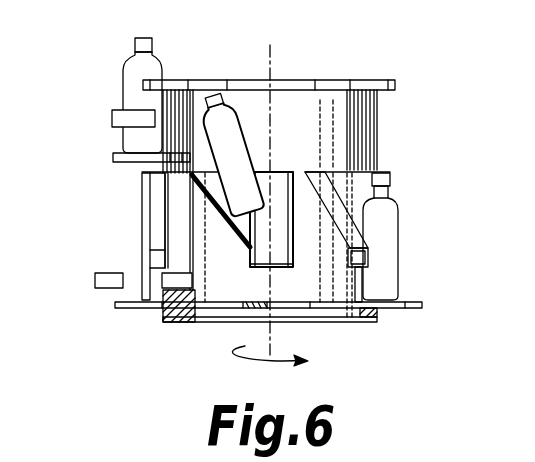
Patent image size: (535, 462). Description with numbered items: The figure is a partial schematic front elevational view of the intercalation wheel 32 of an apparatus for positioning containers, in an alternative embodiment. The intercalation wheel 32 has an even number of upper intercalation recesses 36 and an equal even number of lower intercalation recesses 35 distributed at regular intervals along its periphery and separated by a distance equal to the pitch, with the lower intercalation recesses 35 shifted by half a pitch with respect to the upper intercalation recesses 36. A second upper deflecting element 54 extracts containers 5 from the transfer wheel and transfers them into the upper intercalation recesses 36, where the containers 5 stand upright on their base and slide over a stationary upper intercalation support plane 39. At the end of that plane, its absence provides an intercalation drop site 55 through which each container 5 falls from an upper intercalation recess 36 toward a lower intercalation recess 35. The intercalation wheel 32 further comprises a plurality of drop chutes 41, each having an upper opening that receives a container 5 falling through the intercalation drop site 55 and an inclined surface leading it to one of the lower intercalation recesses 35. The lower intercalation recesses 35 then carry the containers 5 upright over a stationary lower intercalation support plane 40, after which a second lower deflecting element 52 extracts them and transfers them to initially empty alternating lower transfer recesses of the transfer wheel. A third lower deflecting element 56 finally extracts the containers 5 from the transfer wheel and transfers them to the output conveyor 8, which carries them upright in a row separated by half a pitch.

The container 5 is at (390, 225).
The output conveyor 8 is at (135, 309).
The intercalation wheel 32 is at (388, 137).
The lower intercalation recess 35 is at (283, 268).
The upper intercalation recess 36 is at (330, 80).
The upper intercalation support plane 39 is at (117, 162).
The lower intercalation support plane 40 is at (407, 309).
The drop chute 41 is at (250, 250).
The second lower deflecting element 52 is at (168, 289).
The second upper deflecting element 54 is at (120, 110).
The intercalation drop site 55 is at (251, 122).
The third lower deflecting element 56 is at (100, 289).